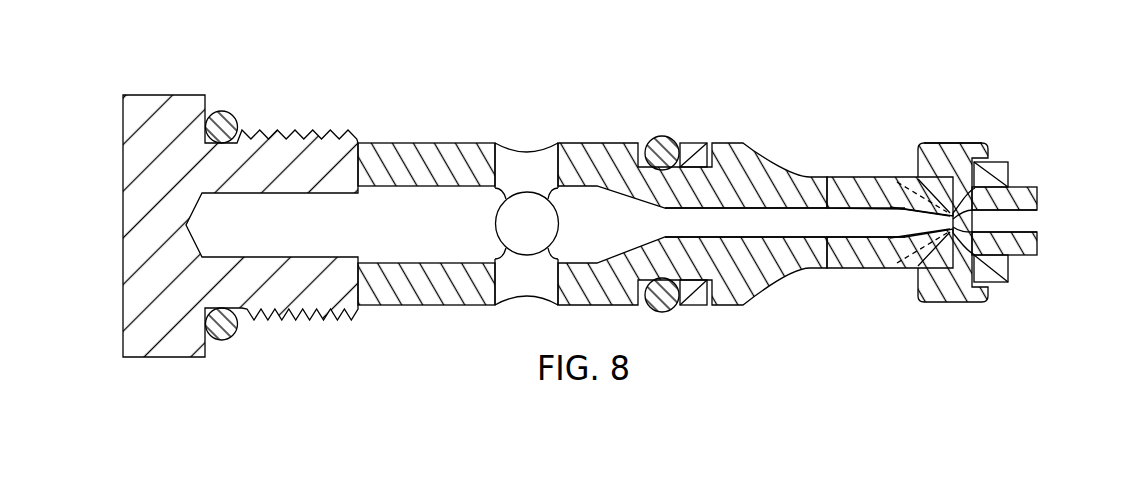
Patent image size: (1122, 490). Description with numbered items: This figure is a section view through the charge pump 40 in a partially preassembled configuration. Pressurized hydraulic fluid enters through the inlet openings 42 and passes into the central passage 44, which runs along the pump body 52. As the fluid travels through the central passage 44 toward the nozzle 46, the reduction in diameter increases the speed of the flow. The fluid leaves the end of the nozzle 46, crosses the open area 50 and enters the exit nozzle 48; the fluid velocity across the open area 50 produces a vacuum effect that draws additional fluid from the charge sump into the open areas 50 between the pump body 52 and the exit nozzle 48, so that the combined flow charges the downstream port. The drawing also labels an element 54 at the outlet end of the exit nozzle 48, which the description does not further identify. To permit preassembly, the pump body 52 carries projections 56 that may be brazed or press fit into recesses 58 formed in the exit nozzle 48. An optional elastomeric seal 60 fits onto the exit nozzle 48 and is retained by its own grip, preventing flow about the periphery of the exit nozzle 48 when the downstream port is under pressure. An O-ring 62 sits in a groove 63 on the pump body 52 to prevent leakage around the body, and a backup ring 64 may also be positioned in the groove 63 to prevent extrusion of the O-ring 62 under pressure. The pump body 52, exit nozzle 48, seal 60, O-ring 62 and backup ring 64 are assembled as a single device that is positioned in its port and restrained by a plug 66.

The charge pump 40 is at (853, 93).
The inlet openings 42 is at (527, 213).
The central passage 44 is at (774, 234).
The nozzle 46 is at (873, 244).
The exit nozzle 48 is at (968, 143).
The open area 50 is at (958, 221).
The pump body 52 is at (437, 143).
The tip insert 54 is at (1030, 231).
The projections 56 is at (920, 177).
The recesses 58 is at (945, 143).
The seal 60 is at (1008, 270).
The O-ring 62 is at (661, 136).
The groove 63 is at (648, 291).
The backup ring 64 is at (690, 143).
The plug 66 is at (123, 223).